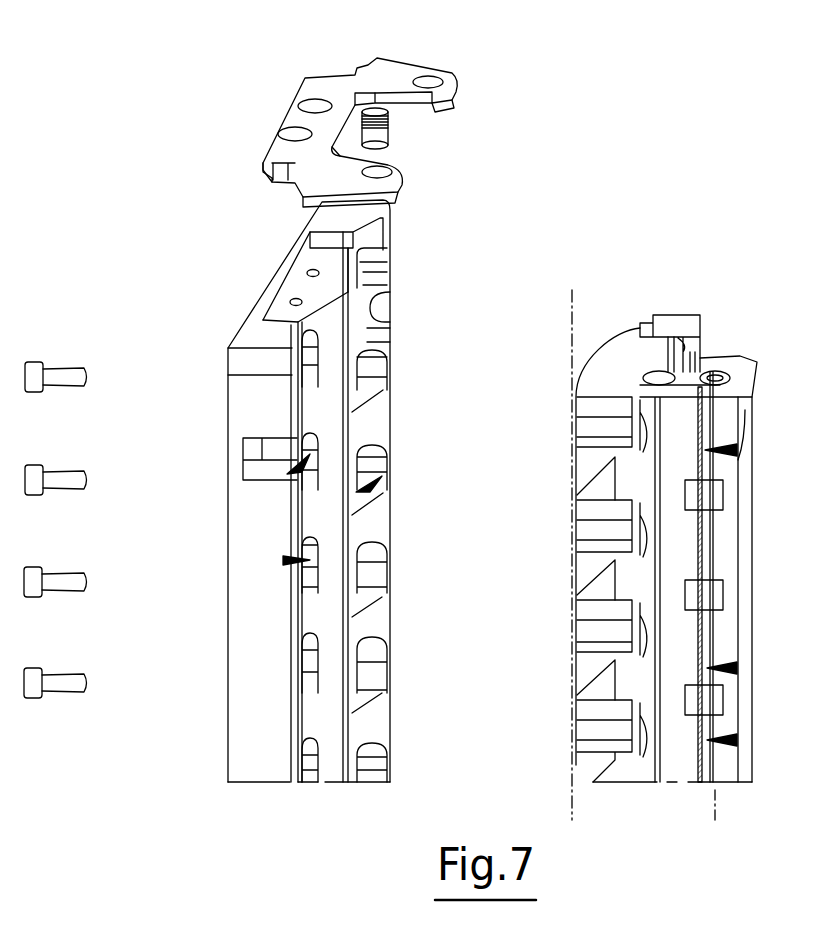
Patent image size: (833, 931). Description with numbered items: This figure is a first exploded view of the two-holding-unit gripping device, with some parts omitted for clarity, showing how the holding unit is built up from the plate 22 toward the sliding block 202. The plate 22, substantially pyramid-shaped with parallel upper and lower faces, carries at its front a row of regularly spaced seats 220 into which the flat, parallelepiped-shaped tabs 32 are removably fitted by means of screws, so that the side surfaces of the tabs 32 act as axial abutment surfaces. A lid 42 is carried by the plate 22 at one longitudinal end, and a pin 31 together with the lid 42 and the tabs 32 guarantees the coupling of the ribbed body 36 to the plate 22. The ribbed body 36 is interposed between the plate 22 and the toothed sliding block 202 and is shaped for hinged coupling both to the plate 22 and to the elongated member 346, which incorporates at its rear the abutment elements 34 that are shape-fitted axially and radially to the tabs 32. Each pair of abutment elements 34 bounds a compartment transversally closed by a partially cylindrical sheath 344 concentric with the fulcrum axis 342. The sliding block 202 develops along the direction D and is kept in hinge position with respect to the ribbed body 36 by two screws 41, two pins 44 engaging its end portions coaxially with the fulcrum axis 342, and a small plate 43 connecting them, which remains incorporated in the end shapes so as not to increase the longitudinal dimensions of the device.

The plate 22 is at (245, 720).
The seats 220 is at (298, 560).
The lids 42 is at (402, 74).
The pin 31 is at (390, 132).
The direction D is at (568, 320).
The tabs 32 is at (576, 613).
The ribbed body 36 is at (645, 325).
The screws 41 is at (670, 372).
The small plate 43 is at (688, 358).
The toothed sliding block 202 is at (732, 365).
The pins 44 is at (760, 358).
The abutment elements 34 is at (735, 600).
The elongated member 346 is at (720, 435).
The partially cylindrical sheath 344 is at (745, 452).
The fulcrum axis 342 is at (716, 803).